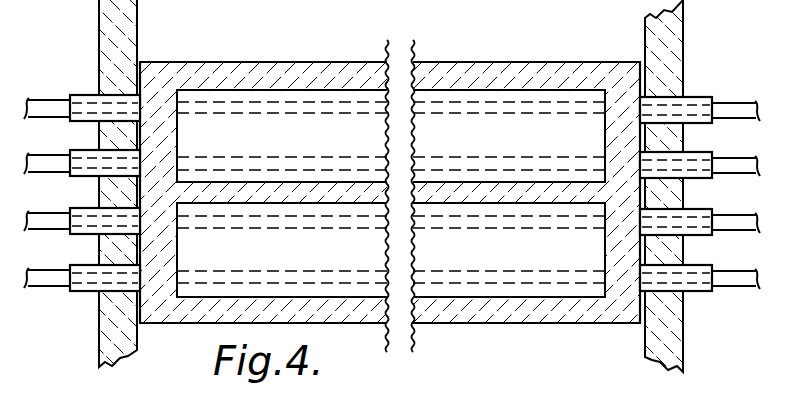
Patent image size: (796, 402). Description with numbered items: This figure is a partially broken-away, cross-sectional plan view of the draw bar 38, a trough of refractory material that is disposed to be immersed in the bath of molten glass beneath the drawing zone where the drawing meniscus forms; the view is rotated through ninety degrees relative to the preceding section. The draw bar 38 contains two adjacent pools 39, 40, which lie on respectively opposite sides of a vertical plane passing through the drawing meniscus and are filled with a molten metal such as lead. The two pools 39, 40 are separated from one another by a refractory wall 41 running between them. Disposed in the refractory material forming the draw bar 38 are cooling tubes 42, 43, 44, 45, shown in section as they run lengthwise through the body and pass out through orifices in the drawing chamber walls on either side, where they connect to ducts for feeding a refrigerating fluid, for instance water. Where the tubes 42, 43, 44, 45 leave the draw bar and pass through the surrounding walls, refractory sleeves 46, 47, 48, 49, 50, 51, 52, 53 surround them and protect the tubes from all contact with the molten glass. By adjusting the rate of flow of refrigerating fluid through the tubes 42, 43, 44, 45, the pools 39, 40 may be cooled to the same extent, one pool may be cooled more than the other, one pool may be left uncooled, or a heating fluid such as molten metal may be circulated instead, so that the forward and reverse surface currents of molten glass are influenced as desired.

The draw bar 38 is at (263, 72).
The pool 39 is at (485, 82).
The pool 40 is at (523, 297).
The refractory wall 41 is at (303, 185).
The cooling tube 42 is at (40, 108).
The cooling tube 43 is at (36, 165).
The cooling tube 44 is at (33, 215).
The cooling tube 45 is at (38, 278).
The refractory sleeve 46 is at (697, 97).
The refractory sleeve 47 is at (700, 150).
The refractory sleeve 48 is at (704, 208).
The refractory sleeve 49 is at (700, 292).
The refractory sleeve 50 is at (86, 292).
The refractory sleeve 51 is at (77, 235).
The refractory sleeve 52 is at (85, 149).
The refractory sleeve 53 is at (85, 96).